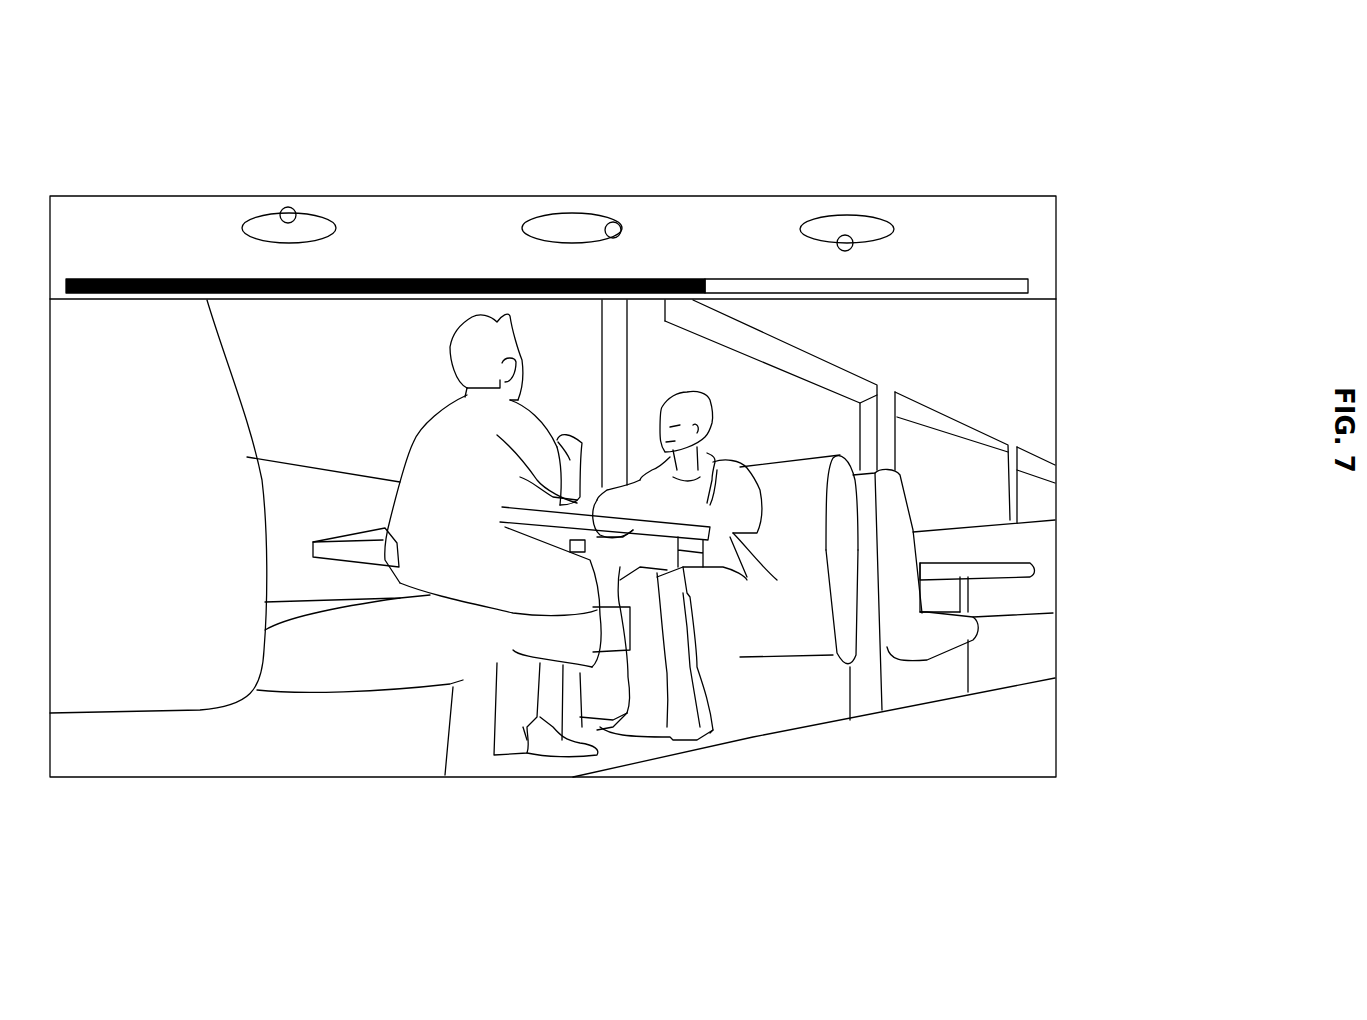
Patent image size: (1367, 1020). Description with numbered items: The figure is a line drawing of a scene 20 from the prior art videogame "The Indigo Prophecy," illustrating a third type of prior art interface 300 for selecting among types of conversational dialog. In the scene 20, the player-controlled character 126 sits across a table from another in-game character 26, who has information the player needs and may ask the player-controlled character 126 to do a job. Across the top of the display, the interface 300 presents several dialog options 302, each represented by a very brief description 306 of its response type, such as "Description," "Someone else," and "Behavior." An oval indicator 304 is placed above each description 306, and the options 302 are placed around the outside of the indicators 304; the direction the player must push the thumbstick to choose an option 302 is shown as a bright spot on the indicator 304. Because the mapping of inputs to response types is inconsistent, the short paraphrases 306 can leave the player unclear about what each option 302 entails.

The third type of prior art interface 300 is at (636, 486).
The dialog option 302 is at (288, 212).
The indicator 304 is at (333, 216).
The brief description 306 is at (230, 262).
The scene 20 is at (630, 538).
The player-controlled character 126 is at (470, 563).
The character 26 is at (750, 553).